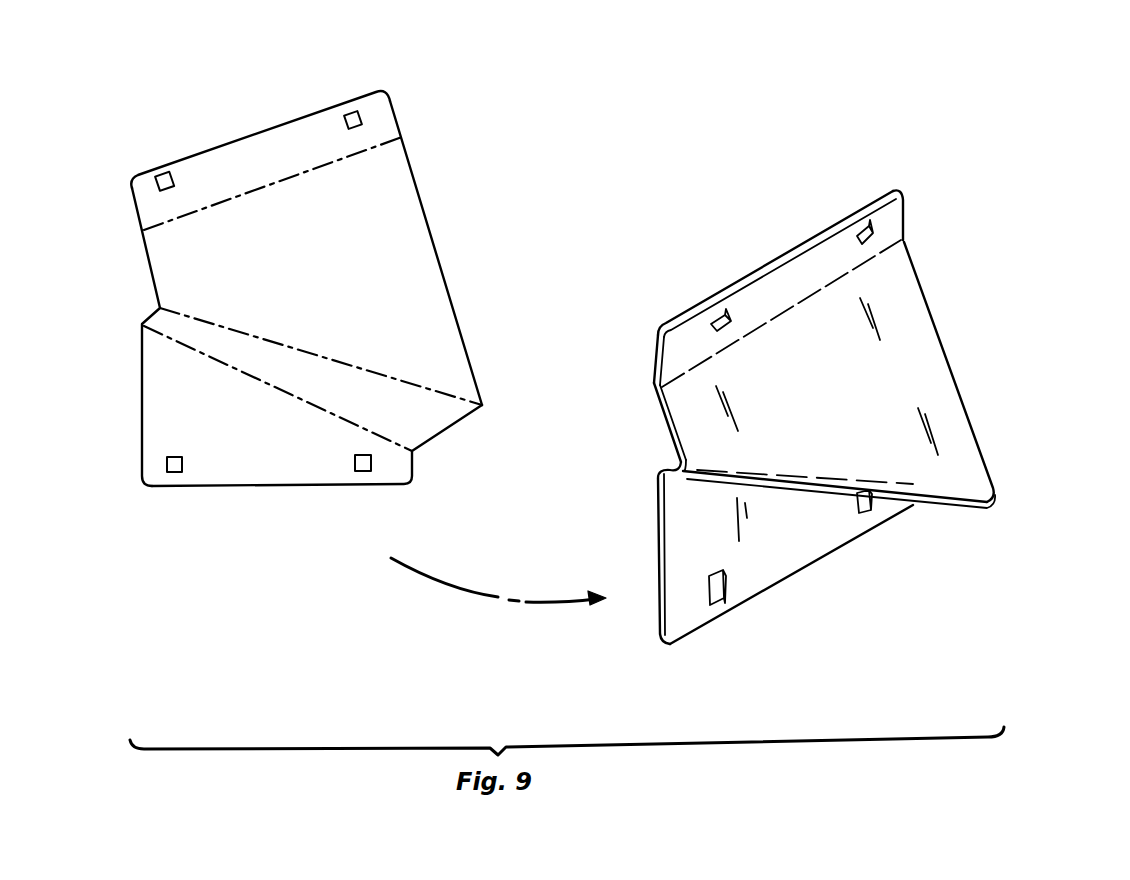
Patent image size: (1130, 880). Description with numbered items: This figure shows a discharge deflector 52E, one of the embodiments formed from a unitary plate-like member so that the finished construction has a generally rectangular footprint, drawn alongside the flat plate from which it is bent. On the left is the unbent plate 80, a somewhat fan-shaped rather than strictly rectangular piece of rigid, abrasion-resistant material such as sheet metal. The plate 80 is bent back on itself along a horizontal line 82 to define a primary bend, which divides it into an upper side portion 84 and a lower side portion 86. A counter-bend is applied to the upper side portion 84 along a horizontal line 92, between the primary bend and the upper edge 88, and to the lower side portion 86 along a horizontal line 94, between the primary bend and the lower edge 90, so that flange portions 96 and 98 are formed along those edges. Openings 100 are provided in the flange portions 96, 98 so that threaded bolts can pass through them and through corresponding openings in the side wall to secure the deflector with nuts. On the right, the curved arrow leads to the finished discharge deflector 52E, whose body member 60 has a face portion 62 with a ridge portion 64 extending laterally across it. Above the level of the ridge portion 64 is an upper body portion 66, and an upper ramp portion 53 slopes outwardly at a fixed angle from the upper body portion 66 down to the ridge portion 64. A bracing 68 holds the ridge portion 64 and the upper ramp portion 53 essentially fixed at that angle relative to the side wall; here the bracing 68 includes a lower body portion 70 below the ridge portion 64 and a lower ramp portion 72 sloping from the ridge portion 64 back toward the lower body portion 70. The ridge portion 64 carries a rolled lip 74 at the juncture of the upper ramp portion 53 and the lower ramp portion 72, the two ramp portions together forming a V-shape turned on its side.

The discharge deflector 52E is at (929, 281).
The upper ramp portion 53 is at (917, 340).
The body member 60 is at (648, 334).
The face portion 62 is at (844, 403).
The ridge portion 64 is at (965, 496).
The upper body portion 66 is at (897, 190).
The bracing 68 is at (655, 455).
The lower body portion 70 is at (694, 515).
The lower ramp portion 72 is at (665, 455).
The rolled lip 74 is at (787, 486).
The rectangular plate 80 is at (399, 150).
The horizontal line 82 is at (226, 322).
The upper side portion 84 is at (396, 186).
The lower side portion 86 is at (212, 339).
The upper edge 88 is at (196, 135).
The lower edge 90 is at (230, 480).
The horizontal line 92 is at (267, 173).
The horizontal line 94 is at (255, 379).
The flange portion 96 is at (245, 150).
The flange portion 98 is at (283, 447).
The openings 100 is at (152, 163).